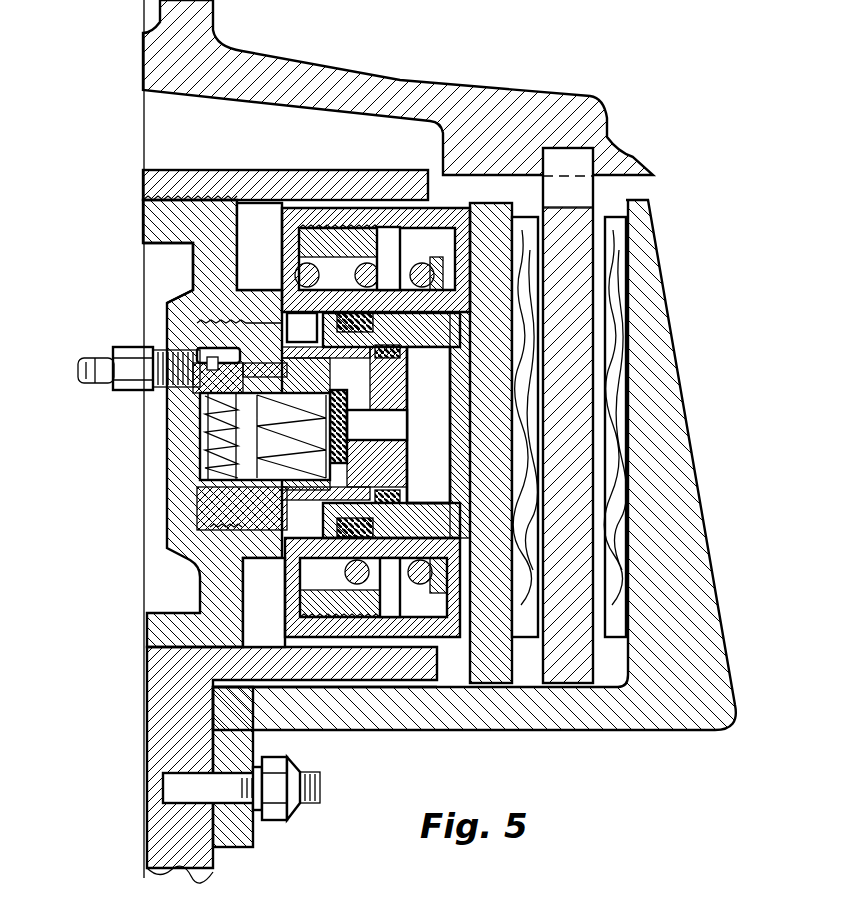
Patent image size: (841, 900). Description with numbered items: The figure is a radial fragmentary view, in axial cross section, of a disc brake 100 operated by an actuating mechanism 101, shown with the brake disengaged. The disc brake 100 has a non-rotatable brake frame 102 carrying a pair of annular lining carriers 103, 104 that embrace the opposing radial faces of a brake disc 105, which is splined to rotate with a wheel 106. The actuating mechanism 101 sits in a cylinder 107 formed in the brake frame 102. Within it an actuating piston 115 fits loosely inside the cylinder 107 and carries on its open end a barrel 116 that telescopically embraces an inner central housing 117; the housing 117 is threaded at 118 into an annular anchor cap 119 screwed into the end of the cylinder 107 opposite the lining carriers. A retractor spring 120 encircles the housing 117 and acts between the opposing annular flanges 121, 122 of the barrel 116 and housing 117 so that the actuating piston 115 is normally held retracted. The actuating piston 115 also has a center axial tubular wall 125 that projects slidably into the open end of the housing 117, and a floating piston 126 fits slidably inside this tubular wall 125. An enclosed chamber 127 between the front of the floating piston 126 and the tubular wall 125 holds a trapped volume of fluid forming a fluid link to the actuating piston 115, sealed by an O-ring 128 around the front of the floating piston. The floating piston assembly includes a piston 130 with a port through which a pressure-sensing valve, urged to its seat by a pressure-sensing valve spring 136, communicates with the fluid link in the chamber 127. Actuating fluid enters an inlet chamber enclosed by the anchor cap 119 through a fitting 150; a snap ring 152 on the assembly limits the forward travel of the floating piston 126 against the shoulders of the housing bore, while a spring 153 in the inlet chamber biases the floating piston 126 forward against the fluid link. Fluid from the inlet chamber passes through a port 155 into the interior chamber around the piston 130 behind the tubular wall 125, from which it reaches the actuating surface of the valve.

The disc brake 100 is at (681, 246).
The actuating mechanism 101 is at (128, 590).
The brake frame 102 is at (185, 853).
The lining carrier 103 is at (500, 640).
The lining carrier 104 is at (617, 427).
The brake disc 105 is at (578, 207).
The wheel 106 is at (400, 74).
The cylinder 107 is at (253, 650).
The actuating piston 115 is at (448, 642).
The barrel 116 is at (378, 608).
The central housing 117 is at (443, 280).
The threaded connection 118 is at (238, 322).
The anchor cap 119 is at (197, 250).
The retractor spring 120 is at (364, 274).
The annular flange 121 is at (457, 214).
The annular flange 122 is at (278, 253).
The tubular wall 125 is at (433, 336).
The floating piston 126 is at (388, 392).
The chamber 127 is at (440, 425).
The O-ring 128 is at (425, 520).
The piston 130 is at (398, 478).
The pressure-sensing valve spring 136 is at (310, 444).
The fitting 150 is at (97, 380).
The snap ring 152 is at (200, 336).
The spring 153 is at (230, 462).
The port 155 is at (200, 490).